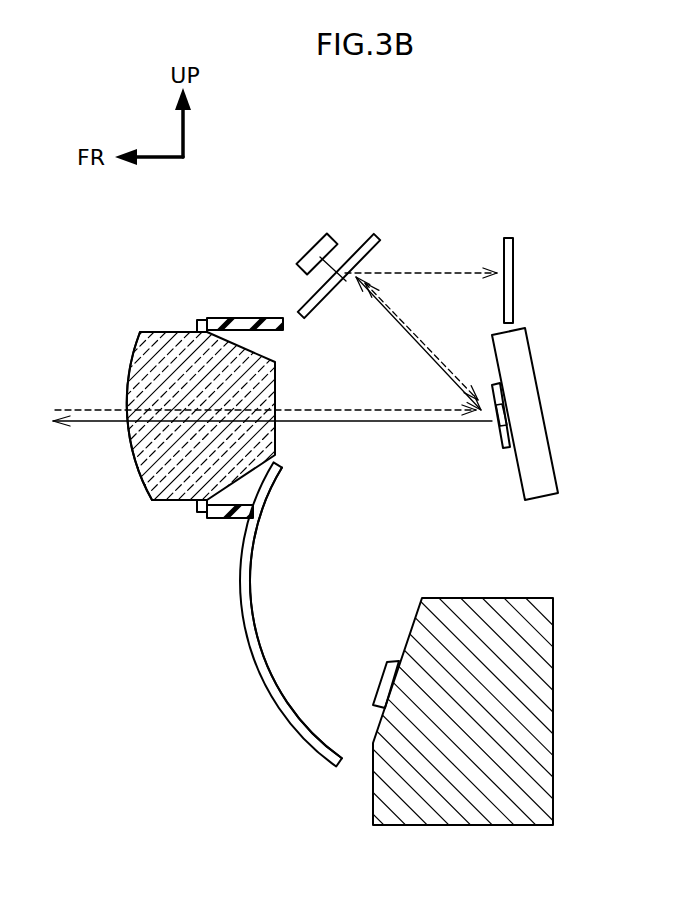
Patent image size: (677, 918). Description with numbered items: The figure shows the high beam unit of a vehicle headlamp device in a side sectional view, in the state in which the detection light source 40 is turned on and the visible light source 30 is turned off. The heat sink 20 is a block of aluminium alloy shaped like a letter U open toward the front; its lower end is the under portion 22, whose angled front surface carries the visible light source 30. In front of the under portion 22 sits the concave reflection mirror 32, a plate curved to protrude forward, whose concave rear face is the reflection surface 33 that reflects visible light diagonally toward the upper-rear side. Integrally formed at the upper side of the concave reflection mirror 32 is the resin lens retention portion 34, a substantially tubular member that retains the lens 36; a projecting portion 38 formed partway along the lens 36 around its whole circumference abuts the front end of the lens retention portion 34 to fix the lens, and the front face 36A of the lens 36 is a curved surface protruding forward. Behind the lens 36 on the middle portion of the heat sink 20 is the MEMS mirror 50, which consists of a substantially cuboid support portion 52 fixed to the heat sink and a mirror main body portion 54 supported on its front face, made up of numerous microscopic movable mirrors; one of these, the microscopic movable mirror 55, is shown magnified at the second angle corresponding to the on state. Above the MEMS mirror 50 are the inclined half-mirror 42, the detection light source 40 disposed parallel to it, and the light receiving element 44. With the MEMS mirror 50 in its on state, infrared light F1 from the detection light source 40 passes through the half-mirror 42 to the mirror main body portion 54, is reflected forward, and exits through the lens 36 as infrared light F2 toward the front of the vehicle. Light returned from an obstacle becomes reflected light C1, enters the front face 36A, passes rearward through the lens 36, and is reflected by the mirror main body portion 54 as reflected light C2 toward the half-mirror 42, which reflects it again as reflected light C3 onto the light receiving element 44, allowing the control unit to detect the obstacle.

The heat sink 20 is at (413, 710).
The under portion 22 is at (555, 747).
The visible light source 30 is at (378, 688).
The concave reflection mirror 32 is at (252, 673).
The reflection surface 33 is at (255, 602).
The lens retention portion 34 is at (240, 317).
The lens 36 is at (140, 330).
The front face 36A is at (128, 440).
The projecting portion 38 is at (200, 320).
The detection light source 40 is at (302, 248).
The half-mirror 42 is at (355, 245).
The light receiving element 44 is at (513, 277).
The MEMS mirror 50 is at (537, 414).
The support portion 52 is at (528, 377).
The mirror main body portion 54 is at (502, 438).
The microscopic movable mirror 55 is at (499, 405).
The reflected light C1 is at (87, 407).
The reflected light C2 is at (417, 333).
The reflected light C3 is at (423, 270).
The infrared light F1 is at (387, 318).
The infrared light F2 is at (350, 423).